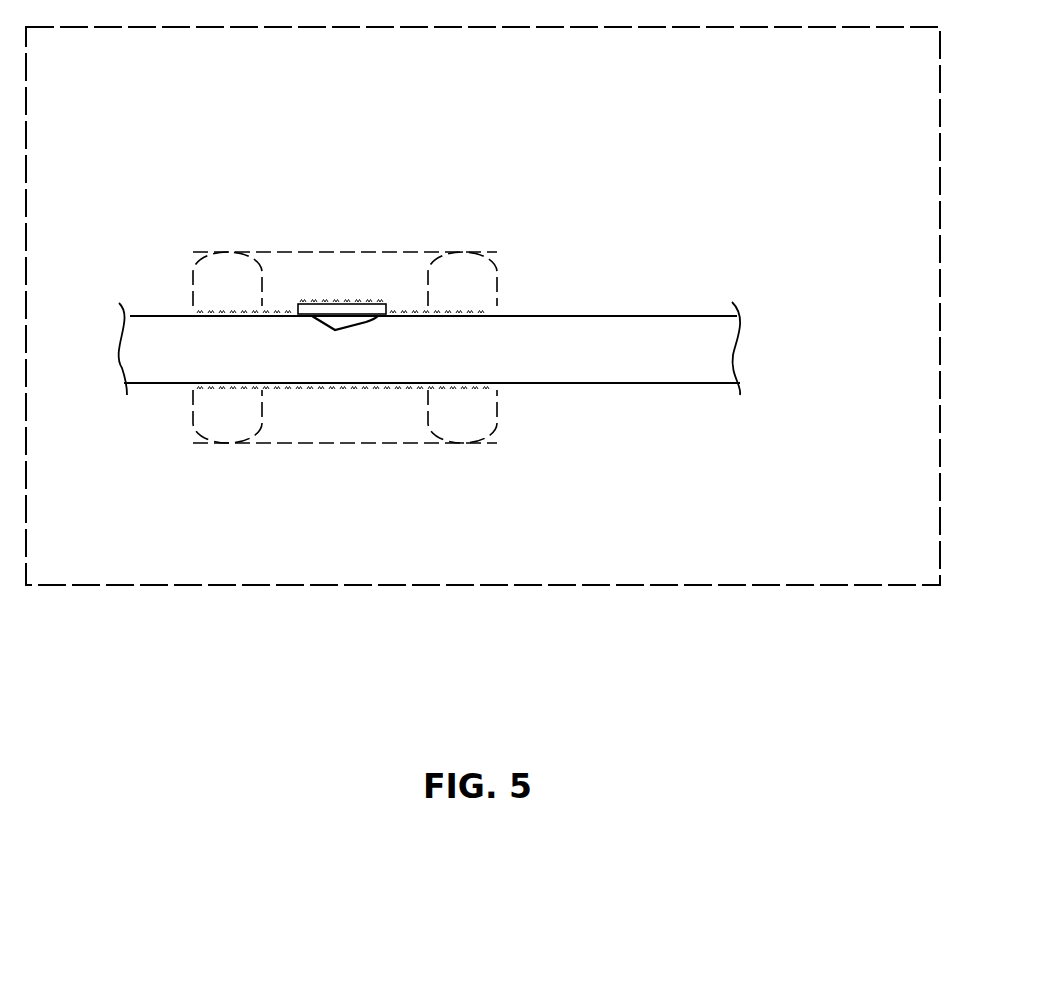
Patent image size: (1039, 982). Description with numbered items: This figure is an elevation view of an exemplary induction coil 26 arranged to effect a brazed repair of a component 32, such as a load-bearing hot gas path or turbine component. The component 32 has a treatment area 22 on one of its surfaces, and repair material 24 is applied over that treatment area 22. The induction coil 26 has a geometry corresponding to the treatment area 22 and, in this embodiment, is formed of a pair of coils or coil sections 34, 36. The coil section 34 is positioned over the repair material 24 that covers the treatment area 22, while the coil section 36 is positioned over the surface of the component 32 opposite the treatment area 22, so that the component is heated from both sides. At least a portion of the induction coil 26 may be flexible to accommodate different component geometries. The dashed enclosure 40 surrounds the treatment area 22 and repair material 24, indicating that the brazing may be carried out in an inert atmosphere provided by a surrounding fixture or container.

The treatment area 22 is at (335, 330).
The repair material 24 is at (320, 304).
The induction coil 26 is at (469, 240).
The component 32 is at (626, 313).
The coil section 34 is at (217, 263).
The coil section 36 is at (226, 420).
The garment panel 40 is at (160, 585).